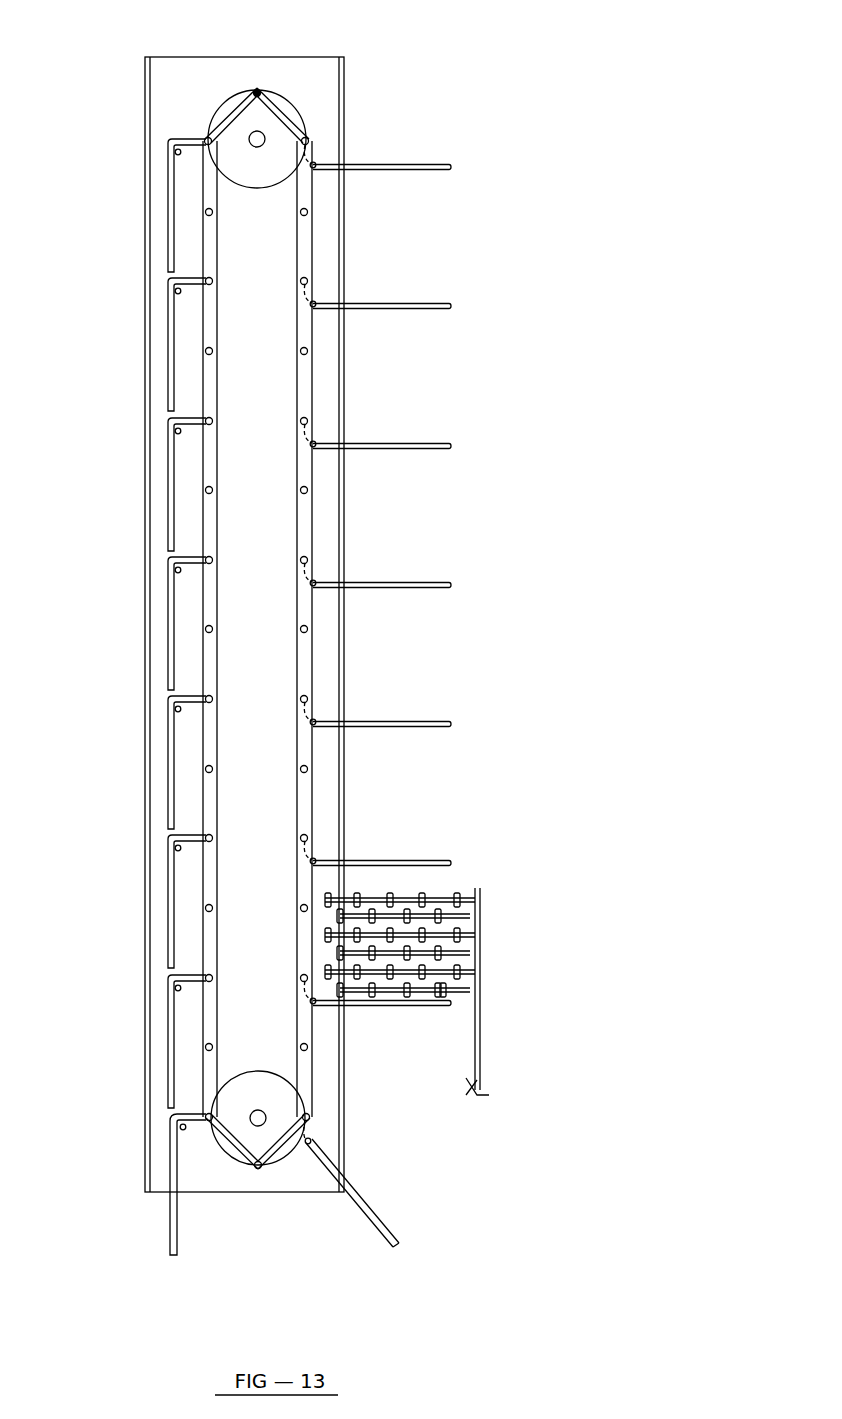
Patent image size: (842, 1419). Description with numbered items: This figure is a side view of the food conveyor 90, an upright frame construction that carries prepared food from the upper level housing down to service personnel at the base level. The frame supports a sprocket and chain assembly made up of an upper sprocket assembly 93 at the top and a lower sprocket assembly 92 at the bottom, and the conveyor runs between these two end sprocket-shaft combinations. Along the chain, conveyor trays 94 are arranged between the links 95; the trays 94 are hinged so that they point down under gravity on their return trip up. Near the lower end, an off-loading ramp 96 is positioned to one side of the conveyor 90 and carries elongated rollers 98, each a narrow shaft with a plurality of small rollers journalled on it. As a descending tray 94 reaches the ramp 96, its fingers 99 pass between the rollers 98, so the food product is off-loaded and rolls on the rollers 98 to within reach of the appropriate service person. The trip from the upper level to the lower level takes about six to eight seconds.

The conveyor 90 is at (372, 124).
The lower sprocket assembly 92 is at (222, 1150).
The upper sprocket assembly 93 is at (290, 107).
The conveyor trays 94 is at (410, 305).
The links 95 is at (310, 390).
The off-loading ramp 96 is at (488, 958).
The elongated rollers 98 is at (445, 995).
The fingers 99 is at (455, 587).